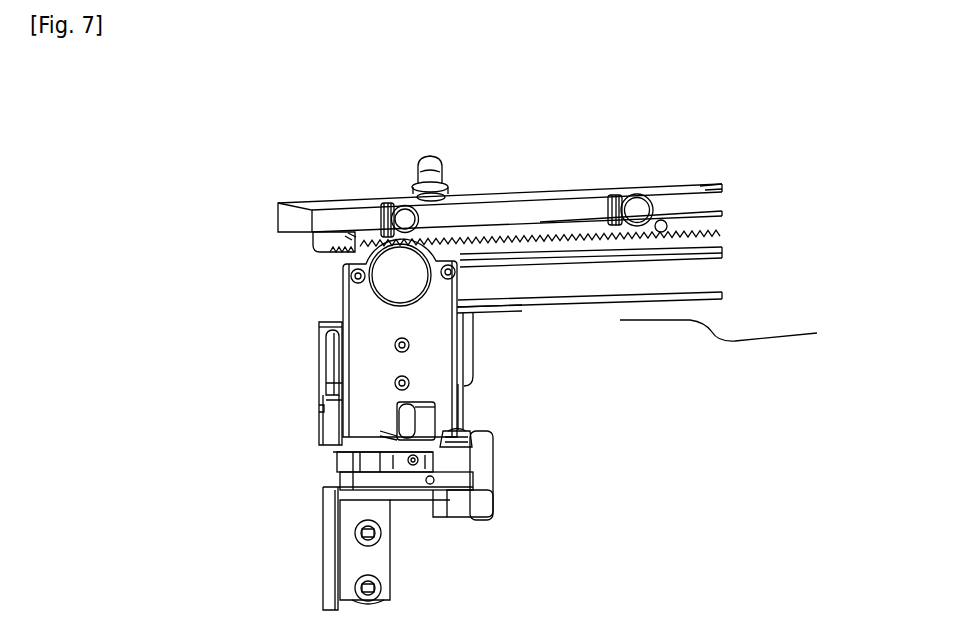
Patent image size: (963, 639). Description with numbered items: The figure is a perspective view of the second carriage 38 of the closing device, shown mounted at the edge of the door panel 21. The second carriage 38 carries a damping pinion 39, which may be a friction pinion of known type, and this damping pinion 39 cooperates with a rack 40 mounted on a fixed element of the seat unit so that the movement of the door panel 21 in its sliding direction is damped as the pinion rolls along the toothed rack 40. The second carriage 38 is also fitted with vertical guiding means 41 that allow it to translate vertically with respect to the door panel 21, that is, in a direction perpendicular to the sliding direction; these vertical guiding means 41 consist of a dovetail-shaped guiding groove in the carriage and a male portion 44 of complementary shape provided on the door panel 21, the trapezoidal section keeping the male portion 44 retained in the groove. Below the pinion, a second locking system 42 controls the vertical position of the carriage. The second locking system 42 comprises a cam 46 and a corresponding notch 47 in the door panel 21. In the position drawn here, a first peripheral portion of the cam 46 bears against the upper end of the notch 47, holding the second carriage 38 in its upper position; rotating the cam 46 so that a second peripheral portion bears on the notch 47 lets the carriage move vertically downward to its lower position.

The door panel 21 is at (737, 326).
The second carriage 38 is at (368, 321).
The damping pinion 39 is at (355, 243).
The rack 40 is at (556, 235).
The vertical guiding means 41 is at (330, 355).
The second locking system 42 is at (337, 453).
The male portion 44 is at (333, 378).
The cam 46 is at (413, 418).
The notch 47 is at (421, 403).